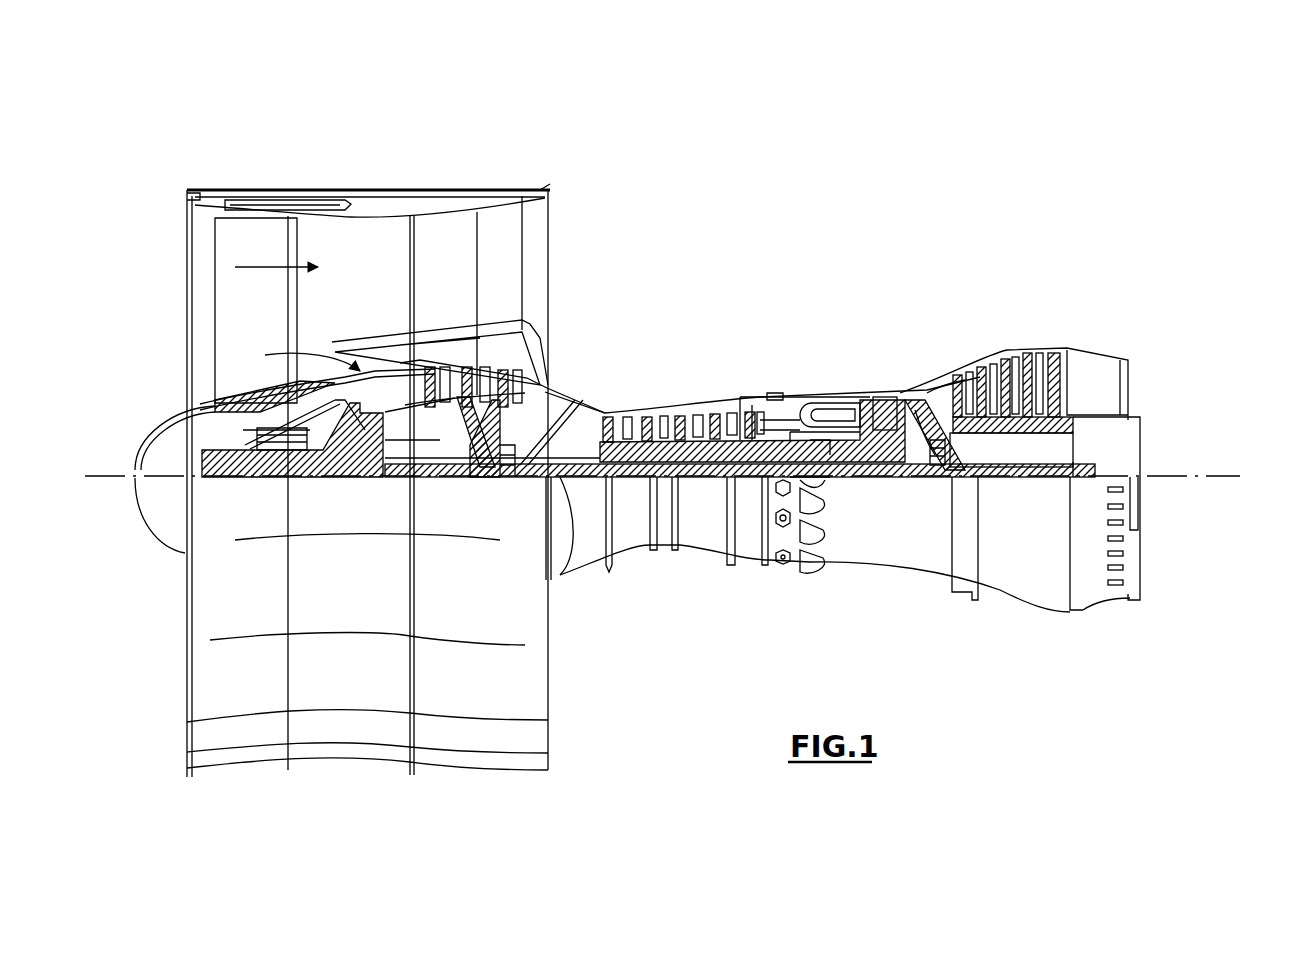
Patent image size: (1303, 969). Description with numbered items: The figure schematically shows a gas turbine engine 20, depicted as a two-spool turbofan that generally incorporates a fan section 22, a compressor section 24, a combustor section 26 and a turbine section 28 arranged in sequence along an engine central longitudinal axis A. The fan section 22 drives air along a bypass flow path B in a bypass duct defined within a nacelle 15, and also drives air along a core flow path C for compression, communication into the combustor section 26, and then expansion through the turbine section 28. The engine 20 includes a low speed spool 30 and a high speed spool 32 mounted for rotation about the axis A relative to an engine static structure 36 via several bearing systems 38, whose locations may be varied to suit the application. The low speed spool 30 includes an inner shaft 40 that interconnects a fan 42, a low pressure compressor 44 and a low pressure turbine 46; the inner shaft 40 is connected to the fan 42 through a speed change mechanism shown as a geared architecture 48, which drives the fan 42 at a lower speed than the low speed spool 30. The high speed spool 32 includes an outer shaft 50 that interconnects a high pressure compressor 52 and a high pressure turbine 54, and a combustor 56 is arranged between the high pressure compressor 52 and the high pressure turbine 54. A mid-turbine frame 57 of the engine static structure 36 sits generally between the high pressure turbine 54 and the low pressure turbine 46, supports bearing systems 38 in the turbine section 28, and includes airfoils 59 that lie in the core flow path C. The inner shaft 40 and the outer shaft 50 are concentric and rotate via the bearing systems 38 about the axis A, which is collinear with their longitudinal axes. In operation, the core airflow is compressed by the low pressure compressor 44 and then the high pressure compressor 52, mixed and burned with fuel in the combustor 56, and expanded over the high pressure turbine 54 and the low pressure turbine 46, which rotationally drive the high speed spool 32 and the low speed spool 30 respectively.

The nacelle 15 is at (371, 197).
The gas turbine engine 20 is at (833, 240).
The fan section 22 is at (298, 183).
The compressor section 24 is at (598, 383).
The combustor section 26 is at (822, 368).
The turbine section 28 is at (970, 338).
The low speed spool 30 is at (706, 482).
The high speed spool 32 is at (752, 398).
The engine static structure 36 is at (748, 568).
The bearing systems 38 is at (507, 463).
The inner shaft 40 is at (572, 485).
The fan 42 is at (272, 316).
The low pressure compressor 44 is at (468, 383).
The low pressure turbine 46 is at (1012, 375).
The geared architecture 48 is at (375, 457).
The outer shaft 50 is at (828, 478).
The high pressure compressor 52 is at (672, 412).
The high pressure turbine 54 is at (893, 395).
The combustor 56 is at (823, 415).
The mid-turbine frame 57 is at (932, 386).
The airfoils 59 is at (930, 404).
The engine central longitudinal axis A is at (1214, 476).
The bypass flow path B is at (272, 267).
The core flow path C is at (305, 355).